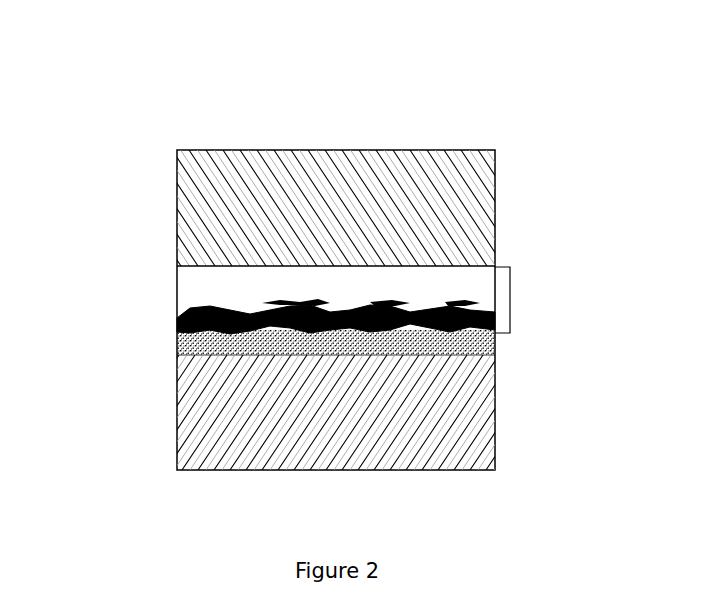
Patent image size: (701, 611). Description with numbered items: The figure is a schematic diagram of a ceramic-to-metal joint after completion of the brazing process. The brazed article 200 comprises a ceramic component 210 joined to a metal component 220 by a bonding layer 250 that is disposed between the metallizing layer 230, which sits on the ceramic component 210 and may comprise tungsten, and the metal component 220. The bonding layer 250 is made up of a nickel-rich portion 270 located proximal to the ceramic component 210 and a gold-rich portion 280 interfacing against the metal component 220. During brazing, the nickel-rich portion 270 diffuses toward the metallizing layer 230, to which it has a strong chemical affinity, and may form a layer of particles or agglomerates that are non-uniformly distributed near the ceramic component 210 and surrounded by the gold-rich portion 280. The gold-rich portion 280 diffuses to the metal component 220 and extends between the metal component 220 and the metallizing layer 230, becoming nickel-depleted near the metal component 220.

The brazed article 200 is at (163, 118).
The ceramic component 210 is at (186, 413).
The metal component 220 is at (187, 201).
The metallizing layer 230 is at (497, 343).
The bonding layer 250 is at (510, 280).
The nickel-rich portion 270 is at (184, 309).
The gold-rich portion 280 is at (184, 287).